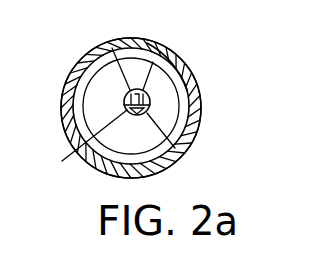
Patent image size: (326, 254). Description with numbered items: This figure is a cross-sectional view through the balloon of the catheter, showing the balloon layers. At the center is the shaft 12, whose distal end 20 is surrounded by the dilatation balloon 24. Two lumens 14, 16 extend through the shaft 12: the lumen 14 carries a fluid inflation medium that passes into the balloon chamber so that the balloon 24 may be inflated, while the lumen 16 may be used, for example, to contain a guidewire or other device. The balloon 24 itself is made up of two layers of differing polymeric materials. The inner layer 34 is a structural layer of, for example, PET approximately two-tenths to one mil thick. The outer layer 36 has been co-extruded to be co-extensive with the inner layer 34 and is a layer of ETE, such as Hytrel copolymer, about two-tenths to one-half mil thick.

The shaft 12 is at (110, 43).
The lumen 14 is at (163, 62).
The lumen 16 is at (80, 144).
The distal end 20 is at (190, 146).
The dilatation balloon 24 is at (209, 70).
The inner layer 34 is at (199, 98).
The outer layer 36 is at (198, 113).